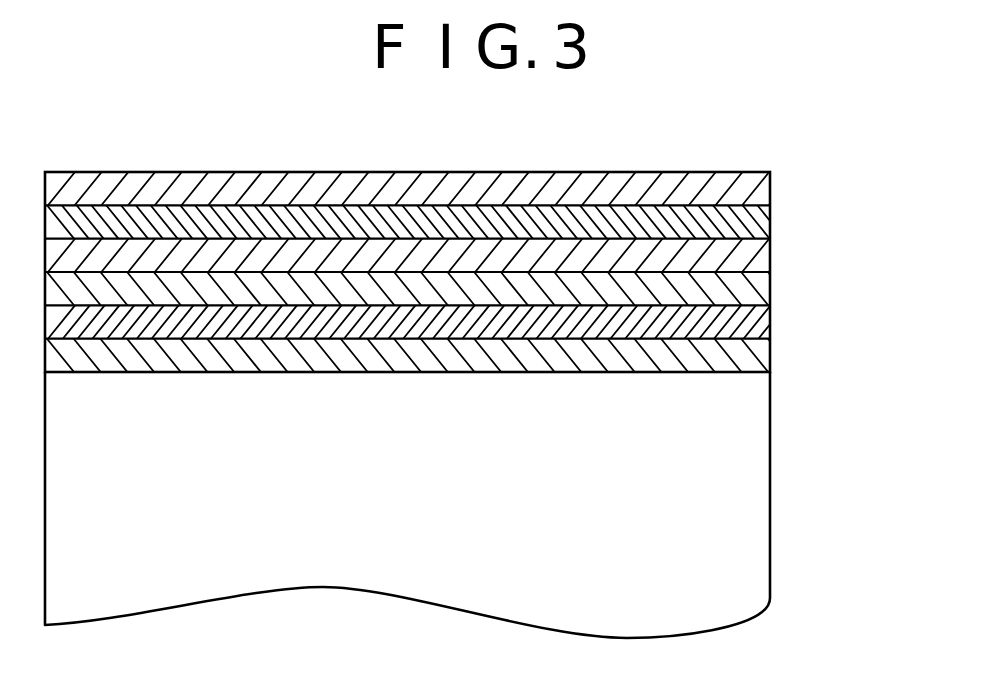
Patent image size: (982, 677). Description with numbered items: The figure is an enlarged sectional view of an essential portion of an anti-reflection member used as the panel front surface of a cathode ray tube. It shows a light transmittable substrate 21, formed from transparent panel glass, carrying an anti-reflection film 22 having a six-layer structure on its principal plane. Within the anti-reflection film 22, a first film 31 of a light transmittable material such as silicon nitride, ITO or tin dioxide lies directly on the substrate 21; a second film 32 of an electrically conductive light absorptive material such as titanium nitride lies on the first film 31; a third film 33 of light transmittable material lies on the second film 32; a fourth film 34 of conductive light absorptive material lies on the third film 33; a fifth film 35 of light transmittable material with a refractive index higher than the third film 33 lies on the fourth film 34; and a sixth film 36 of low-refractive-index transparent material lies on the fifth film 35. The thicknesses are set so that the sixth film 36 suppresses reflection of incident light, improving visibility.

The light transmittable substrate 21 is at (748, 505).
The anti-reflection film 22 is at (864, 178).
The first film 31 is at (762, 362).
The second film 32 is at (762, 327).
The third film 33 is at (762, 293).
The fourth film 34 is at (762, 262).
The fifth film 35 is at (762, 231).
The sixth film 36 is at (760, 196).